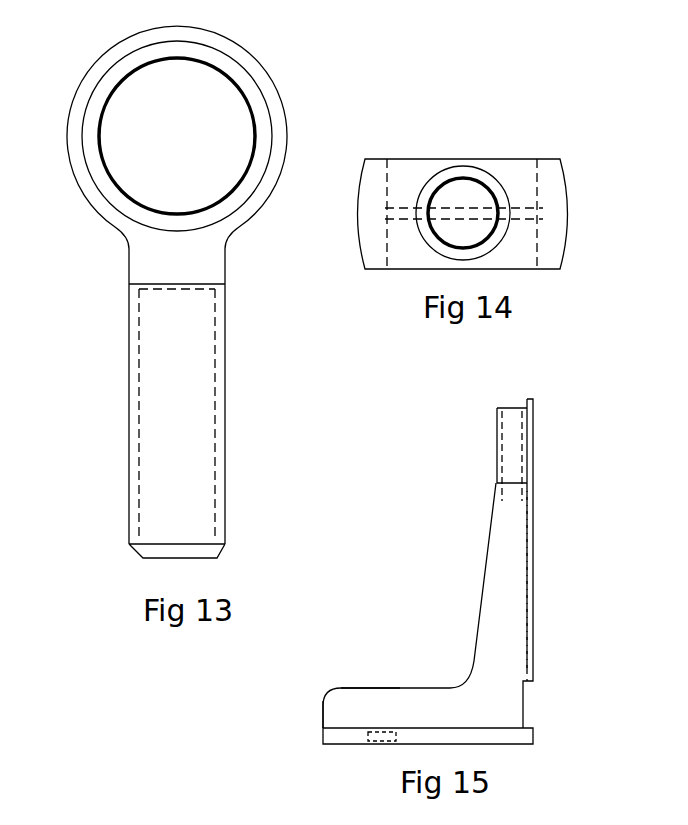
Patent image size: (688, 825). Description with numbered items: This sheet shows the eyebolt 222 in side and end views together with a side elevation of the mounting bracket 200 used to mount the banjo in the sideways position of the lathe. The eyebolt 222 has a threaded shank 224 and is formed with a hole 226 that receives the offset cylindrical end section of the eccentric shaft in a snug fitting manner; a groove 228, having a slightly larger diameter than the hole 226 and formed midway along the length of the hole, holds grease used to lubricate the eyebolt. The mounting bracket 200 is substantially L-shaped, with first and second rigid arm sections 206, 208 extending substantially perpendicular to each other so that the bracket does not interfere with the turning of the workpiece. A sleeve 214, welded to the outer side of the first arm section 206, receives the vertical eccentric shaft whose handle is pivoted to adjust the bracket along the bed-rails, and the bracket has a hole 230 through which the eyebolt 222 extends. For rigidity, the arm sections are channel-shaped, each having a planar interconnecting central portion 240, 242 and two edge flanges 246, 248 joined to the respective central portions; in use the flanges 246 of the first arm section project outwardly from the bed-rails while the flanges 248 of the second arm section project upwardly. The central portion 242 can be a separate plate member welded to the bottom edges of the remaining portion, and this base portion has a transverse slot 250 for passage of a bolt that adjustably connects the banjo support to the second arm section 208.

In FIG. 15, the mounting bracket 200 is at (408, 590).
In FIG. 15, the first arm section 206 is at (503, 642).
In FIG. 15, the second arm section 208 is at (367, 710).
In FIG. 15, the sleeve 214 is at (497, 442).
In FIG. 13, the eyebolt 222 is at (125, 346).
In FIG. 14, the eyebolt 222 is at (446, 137).
In FIG. 13, the threaded shank 224 is at (178, 407).
In FIG. 13, the hole 226 is at (228, 106).
In FIG. 14, the hole 226 is at (505, 178).
In FIG. 14, the groove 228 is at (383, 212).
In FIG. 15, the hole 230 is at (533, 540).
In FIG. 15, the central portion 240 is at (535, 587).
In FIG. 15, the central portion 242 is at (350, 733).
In FIG. 15, the edge flanges 246 is at (488, 522).
In FIG. 15, the edge flanges 248 is at (413, 700).
In FIG. 15, the transverse slot 250 is at (358, 727).